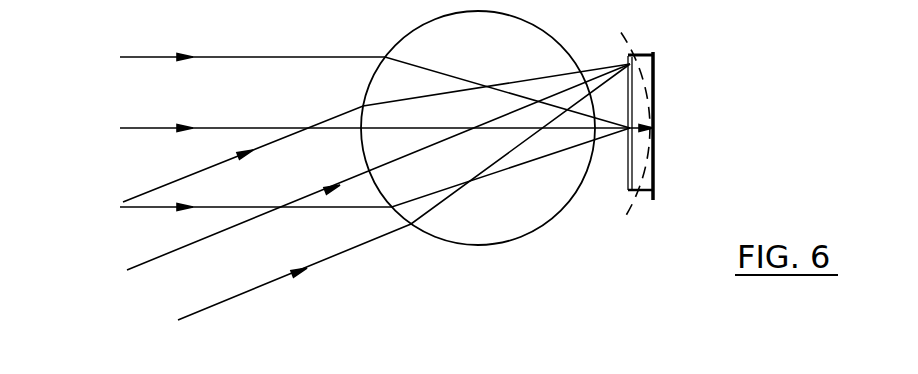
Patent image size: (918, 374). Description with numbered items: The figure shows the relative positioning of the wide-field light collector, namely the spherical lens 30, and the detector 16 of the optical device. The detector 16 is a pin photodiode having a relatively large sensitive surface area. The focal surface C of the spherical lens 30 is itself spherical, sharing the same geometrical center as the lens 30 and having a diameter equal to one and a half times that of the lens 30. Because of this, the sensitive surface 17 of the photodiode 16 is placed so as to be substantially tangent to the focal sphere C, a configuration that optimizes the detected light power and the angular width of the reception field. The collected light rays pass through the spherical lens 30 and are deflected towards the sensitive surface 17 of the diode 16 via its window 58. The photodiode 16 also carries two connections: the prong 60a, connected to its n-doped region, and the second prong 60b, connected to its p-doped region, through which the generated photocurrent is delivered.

The detector 16 is at (668, 125).
The sensitive surface 17 is at (654, 100).
The spherical lens 30 is at (488, 219).
The window 58 is at (627, 168).
The prong 60a is at (654, 77).
The second prong 60b is at (654, 175).
The focal surface C is at (620, 235).